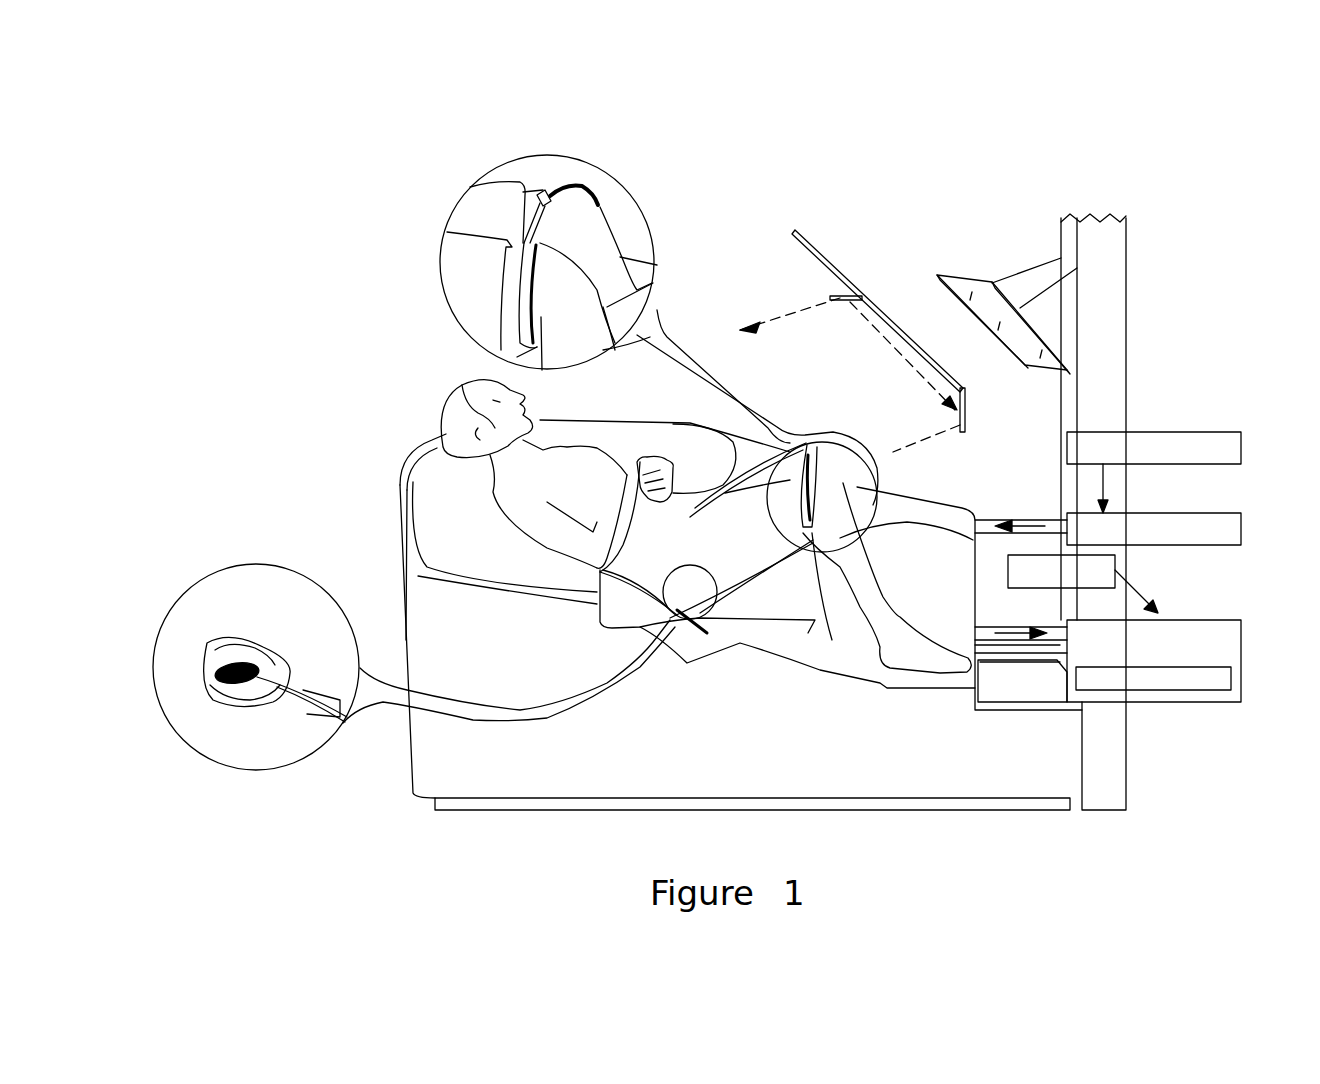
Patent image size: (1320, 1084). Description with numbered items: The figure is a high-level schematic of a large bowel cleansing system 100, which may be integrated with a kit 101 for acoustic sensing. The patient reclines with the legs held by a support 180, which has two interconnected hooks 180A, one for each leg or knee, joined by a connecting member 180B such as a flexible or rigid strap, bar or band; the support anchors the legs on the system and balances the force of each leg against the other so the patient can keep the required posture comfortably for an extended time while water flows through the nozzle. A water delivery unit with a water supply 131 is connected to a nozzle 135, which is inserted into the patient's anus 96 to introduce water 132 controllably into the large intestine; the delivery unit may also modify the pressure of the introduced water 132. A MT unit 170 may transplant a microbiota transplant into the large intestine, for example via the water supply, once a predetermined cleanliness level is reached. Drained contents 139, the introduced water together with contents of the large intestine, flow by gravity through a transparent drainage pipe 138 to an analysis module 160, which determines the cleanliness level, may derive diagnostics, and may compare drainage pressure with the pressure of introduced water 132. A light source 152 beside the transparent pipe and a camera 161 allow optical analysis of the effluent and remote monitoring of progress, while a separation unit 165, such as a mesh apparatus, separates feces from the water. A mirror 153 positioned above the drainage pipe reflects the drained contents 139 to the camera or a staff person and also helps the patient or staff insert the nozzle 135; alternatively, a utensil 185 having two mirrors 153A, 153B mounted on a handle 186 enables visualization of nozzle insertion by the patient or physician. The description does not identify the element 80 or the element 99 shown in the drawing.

The large bowel cleansing system 100 is at (285, 178).
The chair 80 is at (400, 500).
The kit for acoustic sensing 101 is at (733, 460).
The support 180 is at (430, 175).
The hooks 180A is at (582, 187).
The connecting member 180B is at (535, 232).
The utensil 185 is at (810, 210).
The handle 186 is at (850, 275).
The mirror 153 is at (937, 275).
The mirror 153A is at (965, 400).
The mirror 153B is at (835, 298).
The MT unit 170 is at (1178, 432).
The water supply 131 is at (1180, 513).
The introduced water 132 is at (1030, 525).
The drained contents 139 is at (1015, 630).
The camera 161 is at (1120, 570).
The analysis module 160 is at (1188, 620).
The separation unit 165 is at (1188, 690).
The light source 152 is at (1030, 692).
The transparent drainage pipe 138 is at (987, 643).
The nozzle 135 is at (317, 713).
The bladder 99 is at (237, 665).
The anus 96 is at (225, 700).